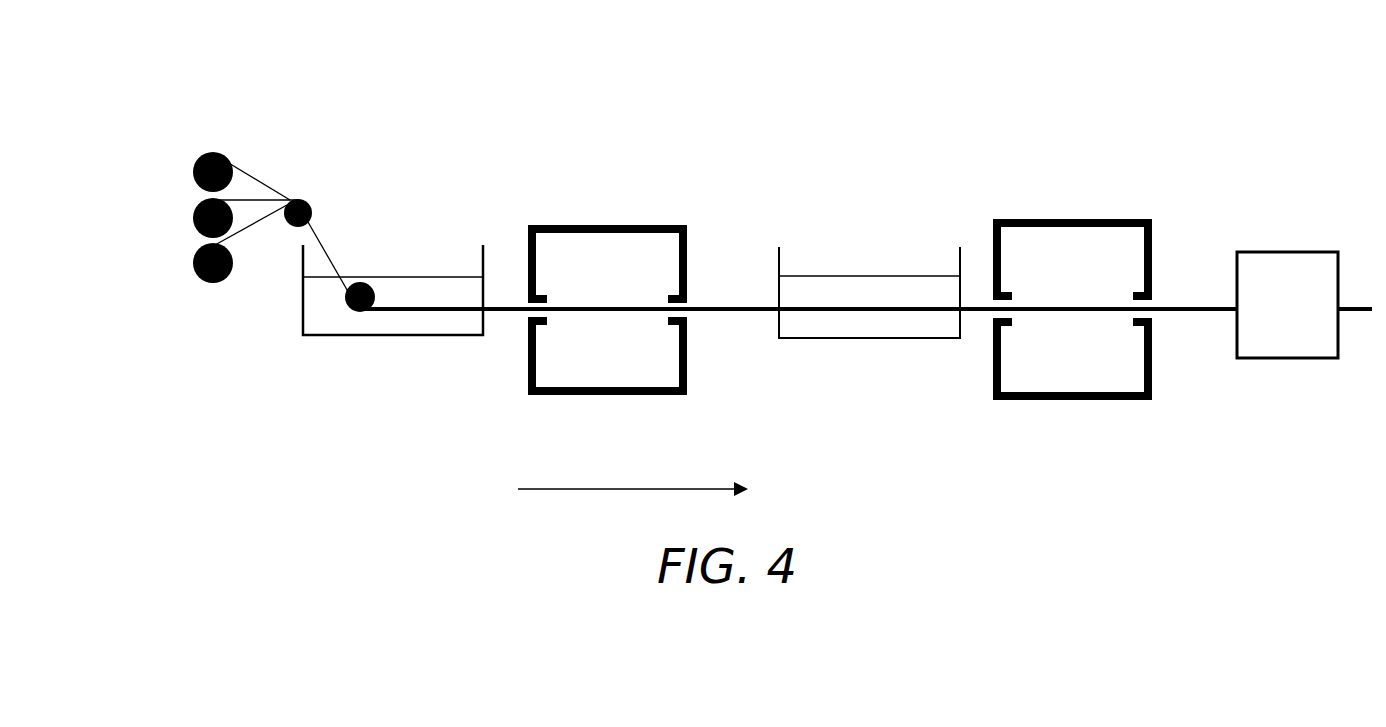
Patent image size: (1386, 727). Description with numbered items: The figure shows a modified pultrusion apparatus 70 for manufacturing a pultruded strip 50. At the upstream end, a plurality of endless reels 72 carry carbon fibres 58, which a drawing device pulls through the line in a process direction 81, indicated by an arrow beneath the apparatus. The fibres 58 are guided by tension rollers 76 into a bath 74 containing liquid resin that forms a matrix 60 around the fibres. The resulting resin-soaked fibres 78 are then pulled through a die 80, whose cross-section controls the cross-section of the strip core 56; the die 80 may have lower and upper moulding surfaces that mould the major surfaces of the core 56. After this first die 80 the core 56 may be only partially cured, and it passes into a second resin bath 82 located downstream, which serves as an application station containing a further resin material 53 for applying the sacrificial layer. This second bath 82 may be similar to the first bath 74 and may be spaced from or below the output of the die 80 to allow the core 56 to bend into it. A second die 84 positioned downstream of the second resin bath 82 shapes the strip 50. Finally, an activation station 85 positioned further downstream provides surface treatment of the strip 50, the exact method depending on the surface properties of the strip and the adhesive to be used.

The apparatus 70 is at (1108, 140).
The endless reels 72 is at (176, 184).
The carbon fibres 58 is at (328, 248).
The tension rollers 76 is at (367, 280).
The bath 74 is at (343, 337).
The matrix 60 is at (345, 326).
The core 56 is at (724, 309).
The resin-soaked fibres 78 is at (507, 309).
The die 80 is at (620, 374).
The process direction 81 is at (587, 487).
The second resin bath 82 is at (870, 338).
The resin material 53 is at (877, 283).
The second die 84 is at (1094, 378).
The pultruded strip 50 is at (1190, 309).
The activation station 85 is at (1304, 322).